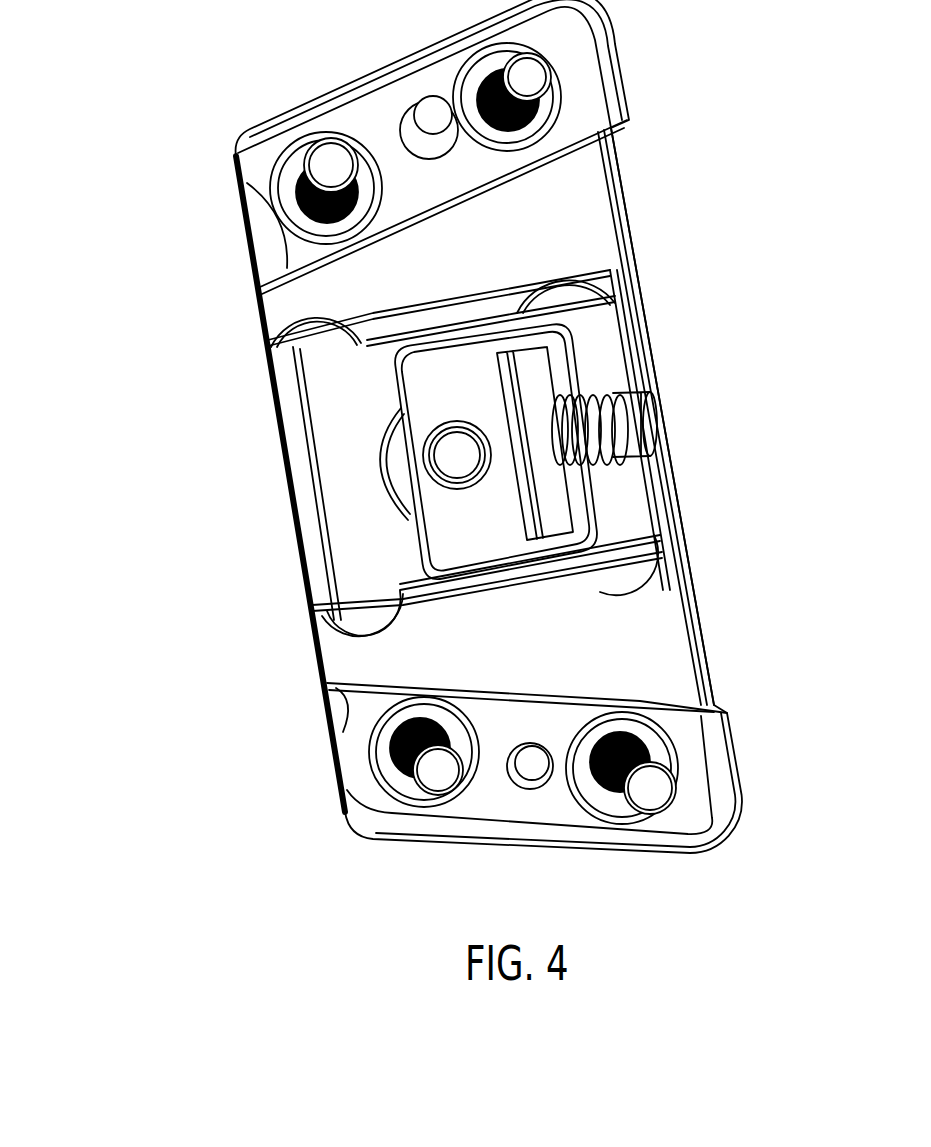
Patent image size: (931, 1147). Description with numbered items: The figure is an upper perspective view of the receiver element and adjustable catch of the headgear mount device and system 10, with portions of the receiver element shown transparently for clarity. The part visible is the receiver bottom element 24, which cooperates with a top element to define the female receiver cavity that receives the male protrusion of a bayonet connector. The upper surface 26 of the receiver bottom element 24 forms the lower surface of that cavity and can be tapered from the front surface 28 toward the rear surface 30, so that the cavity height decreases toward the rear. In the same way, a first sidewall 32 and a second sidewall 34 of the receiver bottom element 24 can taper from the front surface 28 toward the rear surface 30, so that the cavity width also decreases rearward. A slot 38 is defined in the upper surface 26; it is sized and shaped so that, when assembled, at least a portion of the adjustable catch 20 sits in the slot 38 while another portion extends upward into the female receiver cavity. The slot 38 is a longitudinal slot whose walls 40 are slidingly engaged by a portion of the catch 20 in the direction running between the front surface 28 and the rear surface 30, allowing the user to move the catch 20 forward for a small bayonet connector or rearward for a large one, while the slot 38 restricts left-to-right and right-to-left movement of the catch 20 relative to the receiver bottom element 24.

The headgear mount device and system 10 is at (112, 425).
The adjustable catch 20 is at (517, 540).
The receiver bottom element 24 is at (593, 223).
The upper surface 26 is at (667, 657).
The front surface 28 is at (623, 78).
The rear surface 30 is at (260, 308).
The first sidewall 32 is at (233, 165).
The second sidewall 34 is at (350, 687).
The slot 38 is at (337, 390).
The walls 40 is at (517, 313).